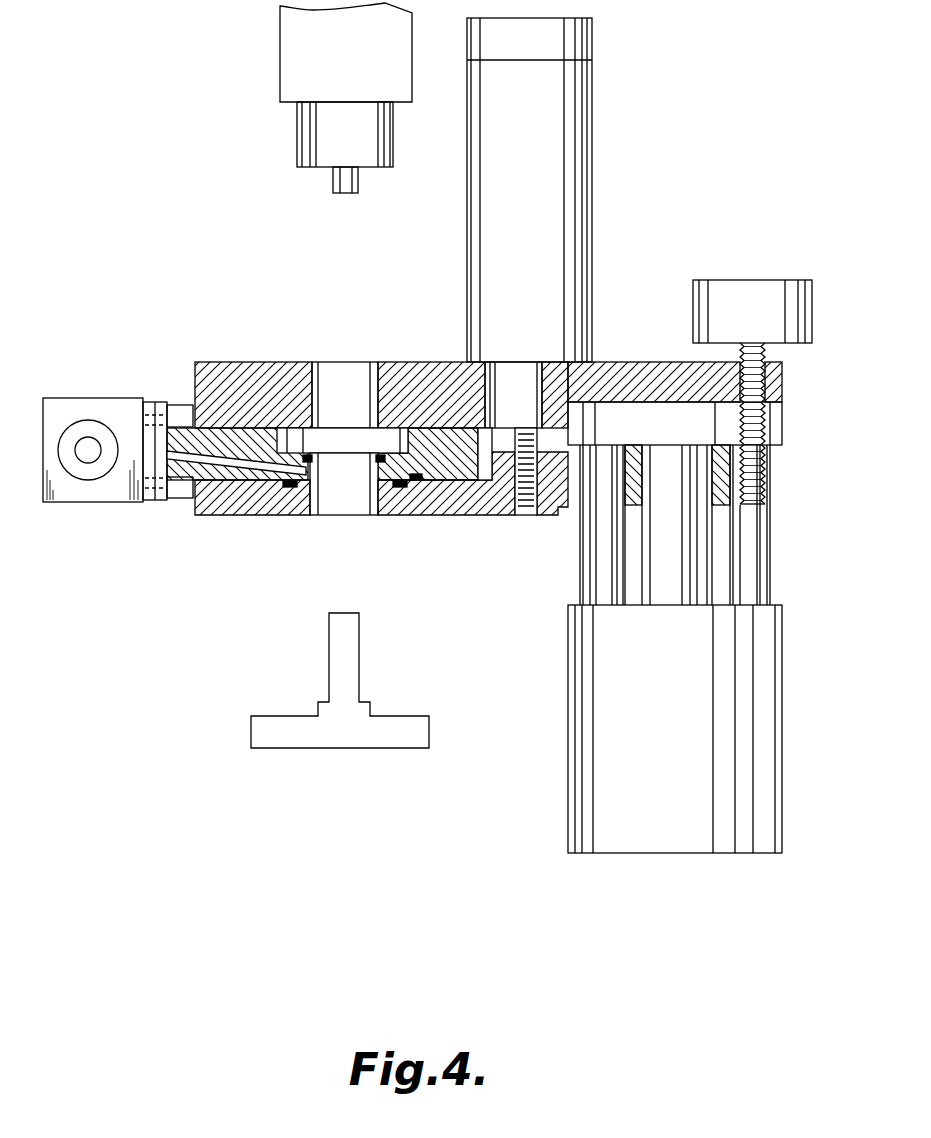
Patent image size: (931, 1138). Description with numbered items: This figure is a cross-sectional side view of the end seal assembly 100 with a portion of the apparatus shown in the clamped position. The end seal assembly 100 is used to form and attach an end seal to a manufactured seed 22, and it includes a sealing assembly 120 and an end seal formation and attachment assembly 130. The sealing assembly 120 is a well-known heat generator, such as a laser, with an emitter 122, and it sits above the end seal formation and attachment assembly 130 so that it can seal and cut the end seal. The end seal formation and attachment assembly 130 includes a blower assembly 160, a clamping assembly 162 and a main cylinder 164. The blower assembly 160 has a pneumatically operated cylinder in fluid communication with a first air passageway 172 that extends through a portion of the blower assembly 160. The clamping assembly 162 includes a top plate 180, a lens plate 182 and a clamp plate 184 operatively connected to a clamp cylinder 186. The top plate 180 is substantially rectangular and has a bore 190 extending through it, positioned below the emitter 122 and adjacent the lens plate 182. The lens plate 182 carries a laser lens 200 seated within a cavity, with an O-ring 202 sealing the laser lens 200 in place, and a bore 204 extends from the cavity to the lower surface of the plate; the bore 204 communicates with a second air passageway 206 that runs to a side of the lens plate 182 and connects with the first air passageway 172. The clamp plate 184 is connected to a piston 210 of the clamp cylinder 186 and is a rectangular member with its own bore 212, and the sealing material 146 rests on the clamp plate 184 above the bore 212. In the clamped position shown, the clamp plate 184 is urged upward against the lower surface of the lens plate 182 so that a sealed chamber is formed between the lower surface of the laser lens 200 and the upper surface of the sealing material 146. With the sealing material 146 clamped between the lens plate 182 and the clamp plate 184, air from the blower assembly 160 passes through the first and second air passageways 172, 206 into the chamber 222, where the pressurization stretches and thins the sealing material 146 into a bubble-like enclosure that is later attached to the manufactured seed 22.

The manufactured seed 22 is at (328, 666).
The end seal assembly 100 is at (217, 270).
The sealing assembly 120 is at (287, 49).
The emitter 122 is at (338, 183).
The end seal formation and attachment assembly 130 is at (232, 360).
The sealing material 146 is at (340, 515).
The blower assembly 160 is at (70, 506).
The clamping assembly 162 is at (534, 190).
The main cylinder 164 is at (566, 797).
The first air passageway 172 is at (155, 445).
The top plate 180 is at (410, 362).
The lens plate 182 is at (490, 480).
The clamp plate 184 is at (448, 517).
The clamp cylinder 186 is at (465, 278).
The bore 190 is at (328, 362).
The laser lens 200 is at (350, 428).
The O-ring 202 is at (288, 488).
The bore 204 is at (378, 517).
The second air passageway 206 is at (211, 468).
The piston 210 is at (538, 438).
The bore 212 is at (335, 515).
The chamber 222 is at (384, 492).